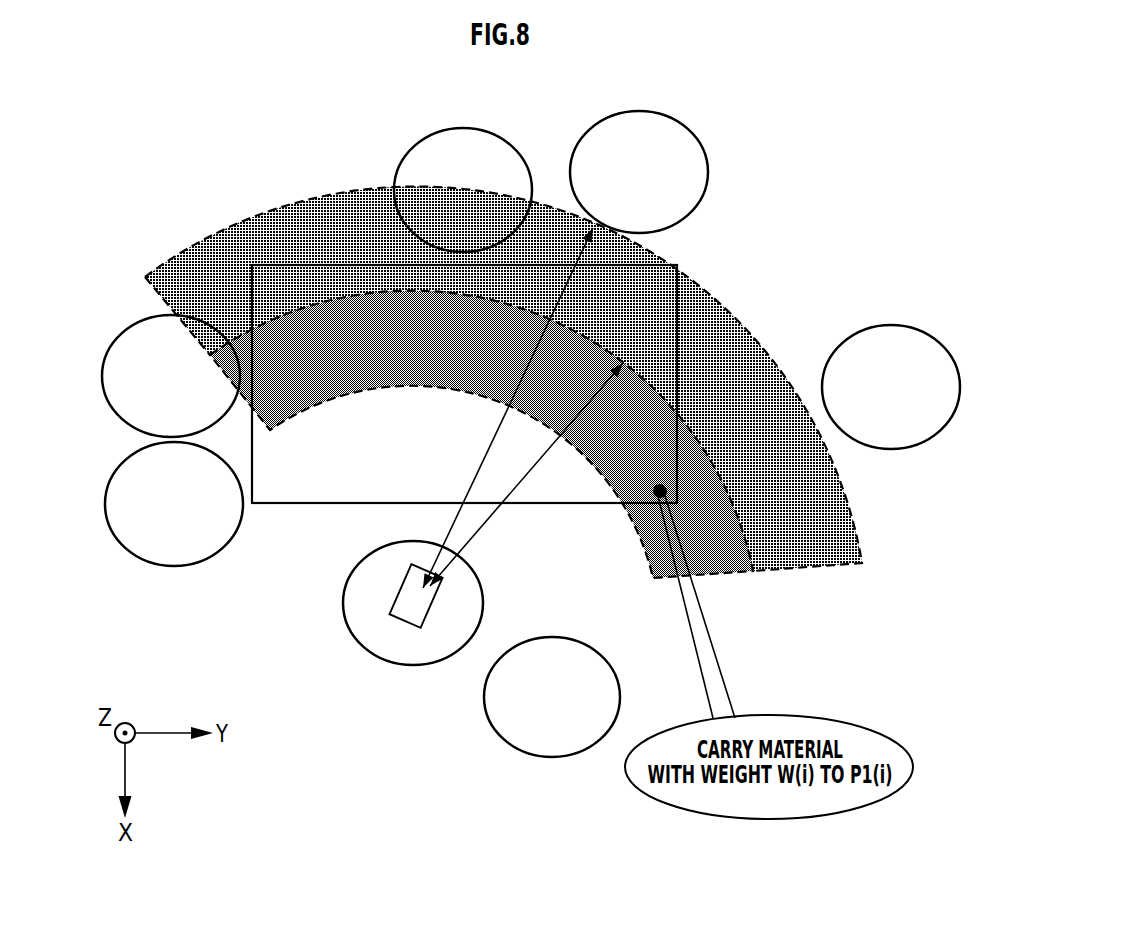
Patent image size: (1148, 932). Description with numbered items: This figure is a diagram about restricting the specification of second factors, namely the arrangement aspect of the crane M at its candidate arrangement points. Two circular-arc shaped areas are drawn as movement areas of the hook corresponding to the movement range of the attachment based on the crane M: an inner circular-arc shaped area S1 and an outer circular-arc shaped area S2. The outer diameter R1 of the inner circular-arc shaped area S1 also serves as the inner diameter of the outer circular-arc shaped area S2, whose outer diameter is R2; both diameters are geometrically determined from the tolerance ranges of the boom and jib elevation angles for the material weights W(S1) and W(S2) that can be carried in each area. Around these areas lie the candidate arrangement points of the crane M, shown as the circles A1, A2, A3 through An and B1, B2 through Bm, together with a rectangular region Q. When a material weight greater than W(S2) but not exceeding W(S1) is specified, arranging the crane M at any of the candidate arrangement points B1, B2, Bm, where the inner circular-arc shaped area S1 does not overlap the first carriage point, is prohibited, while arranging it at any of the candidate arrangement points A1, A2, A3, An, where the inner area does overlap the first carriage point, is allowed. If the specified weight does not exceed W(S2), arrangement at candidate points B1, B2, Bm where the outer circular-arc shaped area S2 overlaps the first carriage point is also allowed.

The outer circular-arc shaped area S2 is at (355, 247).
The inner circular-arc shaped area S1 is at (351, 361).
The target area / rectangular region Q is at (314, 514).
The candidate arrangement point Bm is at (472, 128).
The candidate arrangement point An is at (643, 112).
The candidate arrangement point A3 is at (895, 326).
The candidate arrangement point A2 is at (545, 639).
The candidate arrangement point A1 is at (480, 581).
The candidate arrangement point B2 is at (102, 373).
The candidate arrangement point B1 is at (106, 507).
The crane M is at (400, 638).
The outer diameter of the outer circular-arc shaped area R2 is at (508, 408).
The outer diameter of the inner circular-arc shaped area R1 is at (526, 474).